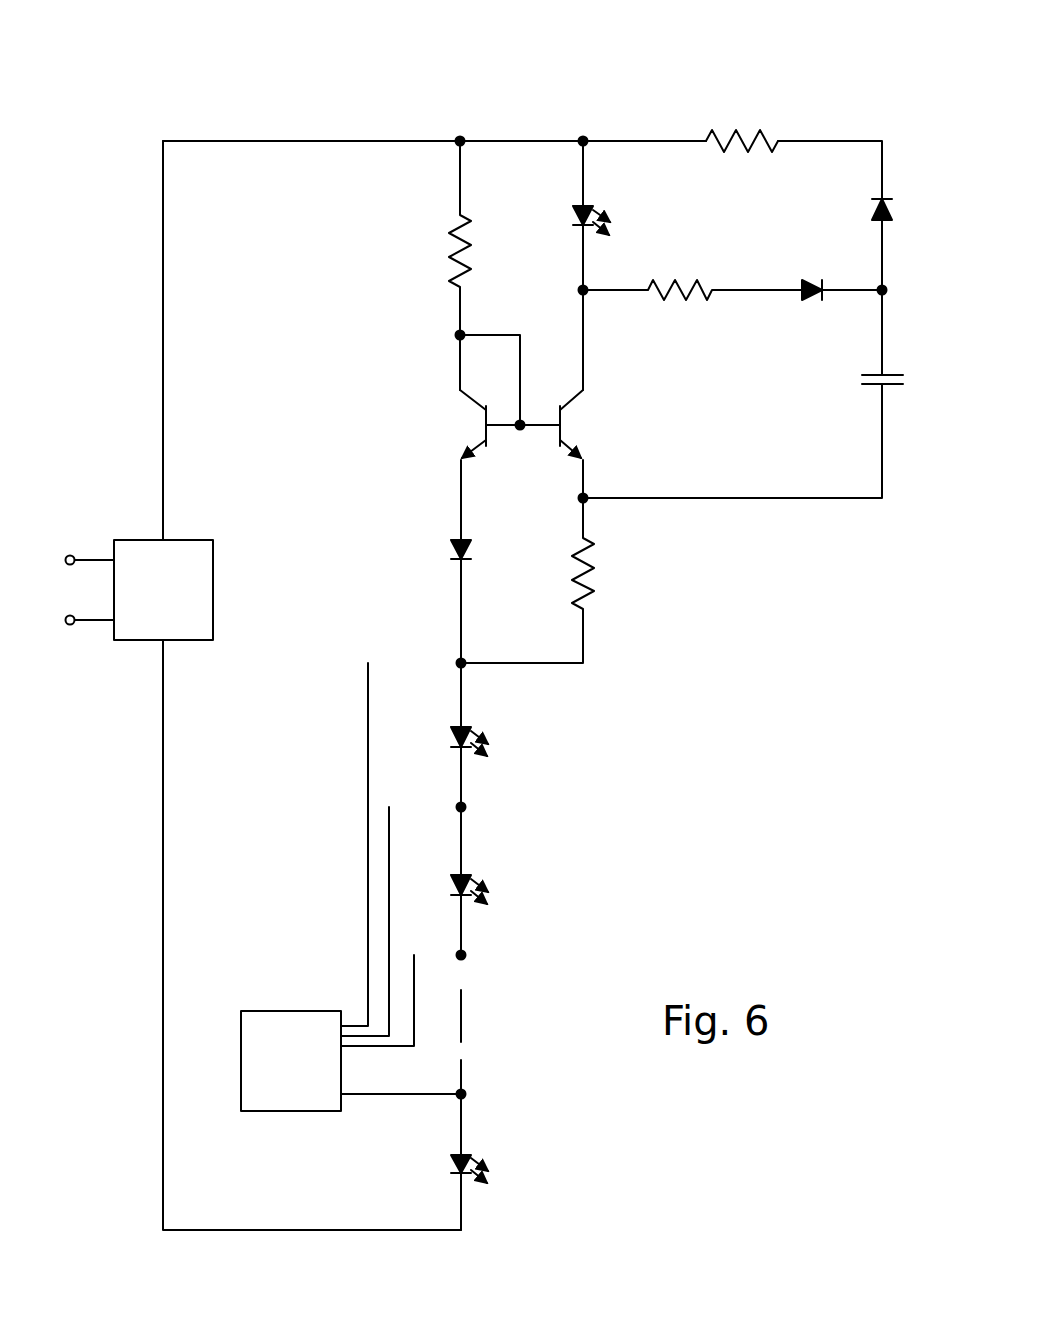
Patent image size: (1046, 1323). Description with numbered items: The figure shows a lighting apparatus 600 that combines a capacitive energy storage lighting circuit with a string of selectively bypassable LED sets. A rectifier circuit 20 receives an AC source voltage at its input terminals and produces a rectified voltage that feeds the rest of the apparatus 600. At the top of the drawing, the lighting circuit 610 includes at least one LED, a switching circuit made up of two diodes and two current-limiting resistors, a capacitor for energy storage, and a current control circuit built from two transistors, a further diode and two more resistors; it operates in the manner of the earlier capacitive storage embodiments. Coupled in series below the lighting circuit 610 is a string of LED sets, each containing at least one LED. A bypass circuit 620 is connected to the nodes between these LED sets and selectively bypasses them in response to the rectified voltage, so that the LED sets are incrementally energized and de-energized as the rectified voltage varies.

The lighting apparatus 600 is at (206, 65).
The lighting circuit 610 is at (547, 108).
The rectifier circuit 20 is at (135, 540).
The bypass circuit 620 is at (290, 1011).